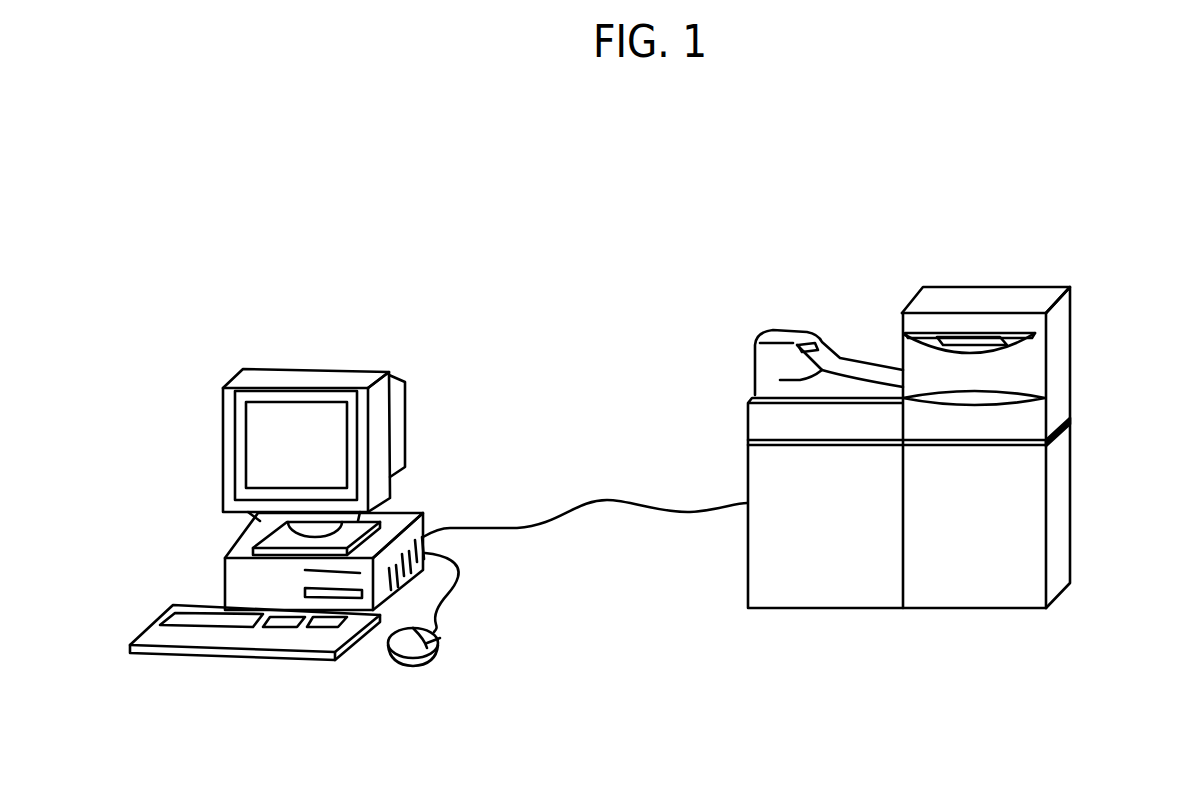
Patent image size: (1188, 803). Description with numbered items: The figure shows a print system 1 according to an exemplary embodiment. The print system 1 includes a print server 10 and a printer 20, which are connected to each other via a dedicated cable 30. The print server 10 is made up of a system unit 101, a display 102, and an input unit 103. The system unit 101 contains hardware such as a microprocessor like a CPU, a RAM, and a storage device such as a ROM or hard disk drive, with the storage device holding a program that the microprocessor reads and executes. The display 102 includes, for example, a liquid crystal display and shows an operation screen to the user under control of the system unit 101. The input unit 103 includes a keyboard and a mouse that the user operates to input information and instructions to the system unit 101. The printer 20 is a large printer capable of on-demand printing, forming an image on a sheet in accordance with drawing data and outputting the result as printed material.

The print system 1 is at (655, 267).
The print server 10 is at (408, 402).
The system unit 101 is at (413, 513).
The display 102 is at (303, 375).
The input unit 103 is at (390, 658).
The printer 20 is at (1073, 430).
The dedicated cable 30 is at (617, 500).